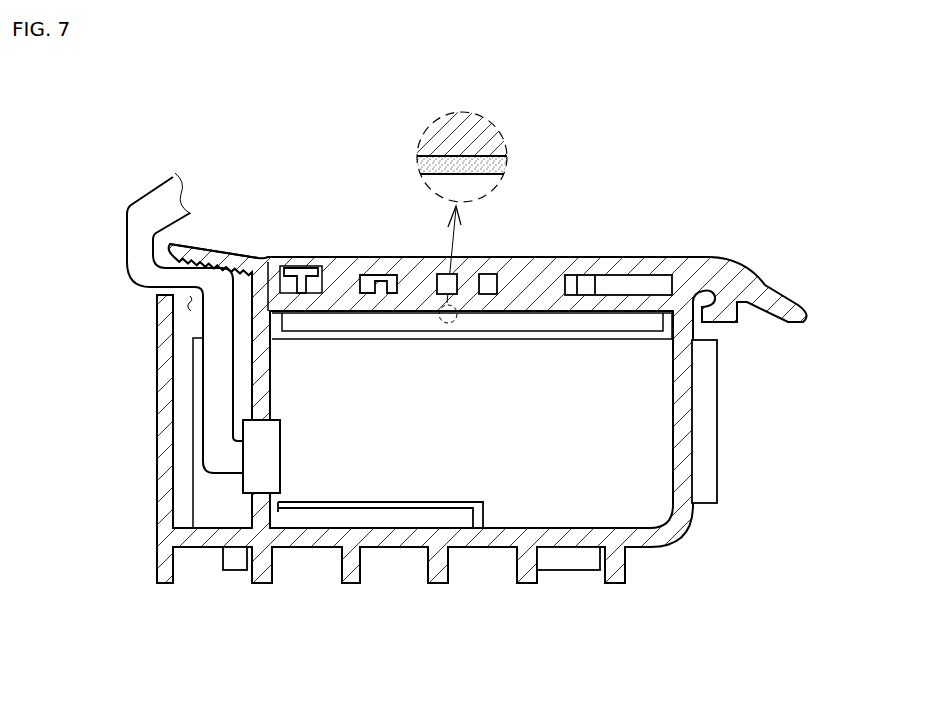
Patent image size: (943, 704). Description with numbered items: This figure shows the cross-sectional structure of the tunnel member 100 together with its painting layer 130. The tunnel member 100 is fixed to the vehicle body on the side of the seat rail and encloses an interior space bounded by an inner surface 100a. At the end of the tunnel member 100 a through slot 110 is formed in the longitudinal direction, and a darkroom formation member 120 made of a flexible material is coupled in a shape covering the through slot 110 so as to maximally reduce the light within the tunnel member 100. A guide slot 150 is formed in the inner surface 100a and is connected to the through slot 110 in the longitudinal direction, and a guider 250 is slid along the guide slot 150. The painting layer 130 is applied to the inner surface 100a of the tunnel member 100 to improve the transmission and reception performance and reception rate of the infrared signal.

The tunnel member 100 is at (440, 133).
The inner surface 100a is at (274, 365).
The through slot 110 is at (188, 304).
The darkroom formation member 120 is at (218, 252).
The painting layer 130 is at (423, 165).
The guide slot 150 is at (262, 488).
The guider 250 is at (253, 453).